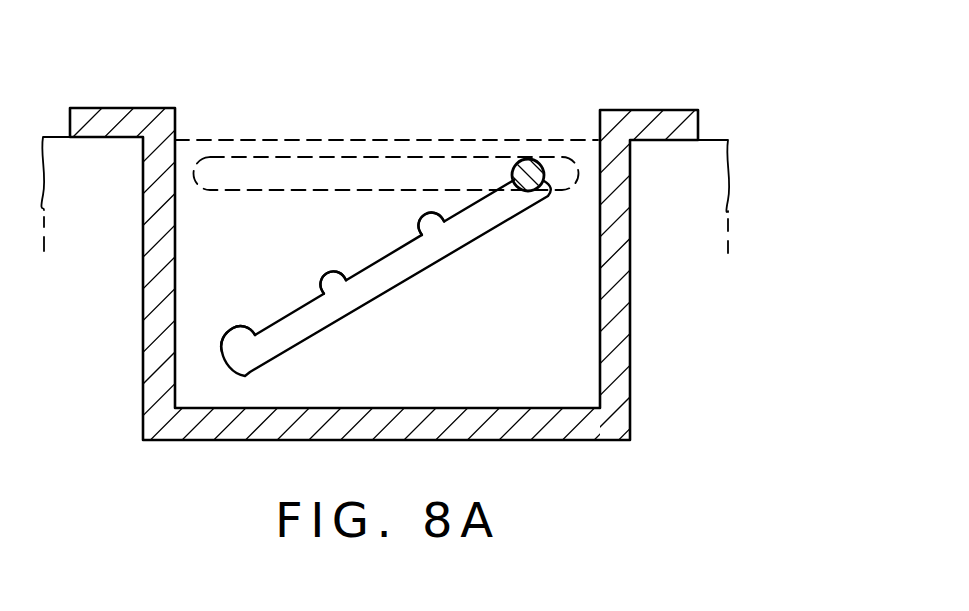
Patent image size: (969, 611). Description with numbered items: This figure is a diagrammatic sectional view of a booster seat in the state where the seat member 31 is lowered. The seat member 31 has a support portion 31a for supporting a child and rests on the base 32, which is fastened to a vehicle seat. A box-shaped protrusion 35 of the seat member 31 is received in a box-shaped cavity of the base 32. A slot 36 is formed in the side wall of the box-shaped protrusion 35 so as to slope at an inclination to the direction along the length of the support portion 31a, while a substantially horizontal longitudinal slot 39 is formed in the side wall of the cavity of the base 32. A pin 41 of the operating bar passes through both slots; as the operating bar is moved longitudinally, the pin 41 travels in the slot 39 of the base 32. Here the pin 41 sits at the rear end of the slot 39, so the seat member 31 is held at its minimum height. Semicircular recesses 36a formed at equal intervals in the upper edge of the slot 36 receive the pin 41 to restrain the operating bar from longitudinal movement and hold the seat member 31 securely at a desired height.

The seat member 31 is at (117, 98).
The support portion 31a is at (647, 116).
The base 32 is at (722, 166).
The box-shaped protrusion 35 is at (632, 320).
The slot 36 is at (343, 316).
The semicircular recess 36a is at (238, 330).
The longitudinal slot 39 is at (328, 159).
The pin 41 is at (528, 159).